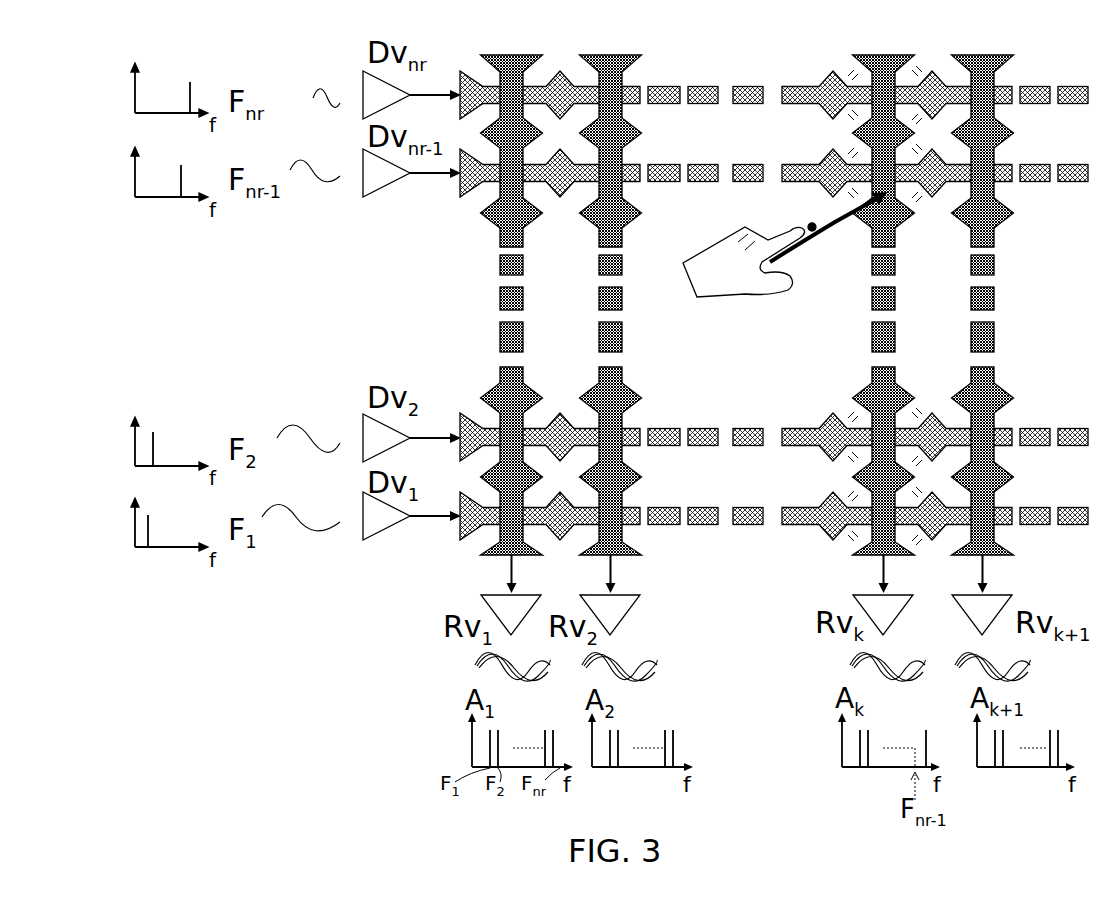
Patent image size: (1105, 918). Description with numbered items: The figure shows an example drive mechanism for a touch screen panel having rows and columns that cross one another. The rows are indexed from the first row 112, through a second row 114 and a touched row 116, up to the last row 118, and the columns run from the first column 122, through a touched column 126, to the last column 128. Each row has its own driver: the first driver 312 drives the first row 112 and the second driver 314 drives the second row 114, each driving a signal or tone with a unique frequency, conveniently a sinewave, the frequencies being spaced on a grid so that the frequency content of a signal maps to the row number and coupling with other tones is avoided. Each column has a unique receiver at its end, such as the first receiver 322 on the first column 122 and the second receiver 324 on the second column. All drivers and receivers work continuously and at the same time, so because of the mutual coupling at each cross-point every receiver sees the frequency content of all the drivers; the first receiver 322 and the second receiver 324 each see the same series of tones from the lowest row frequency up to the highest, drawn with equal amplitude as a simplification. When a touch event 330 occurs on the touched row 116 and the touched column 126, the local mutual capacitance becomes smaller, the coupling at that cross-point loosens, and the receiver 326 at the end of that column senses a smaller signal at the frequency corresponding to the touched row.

The Row1 112 is at (452, 530).
The row 114 is at (457, 420).
The touched row 116 is at (455, 182).
The Rownr 118 is at (455, 90).
The Col1 122 is at (510, 55).
The column 126 is at (881, 55).
The Colnc 128 is at (984, 55).
The driver Dv1 312 is at (360, 530).
The driver Dv2 314 is at (362, 420).
The receiver Rv1 322 is at (490, 608).
The receiver Rv2 324 is at (620, 605).
The receiver Rvk 326 is at (862, 606).
The touch event 330 is at (784, 245).